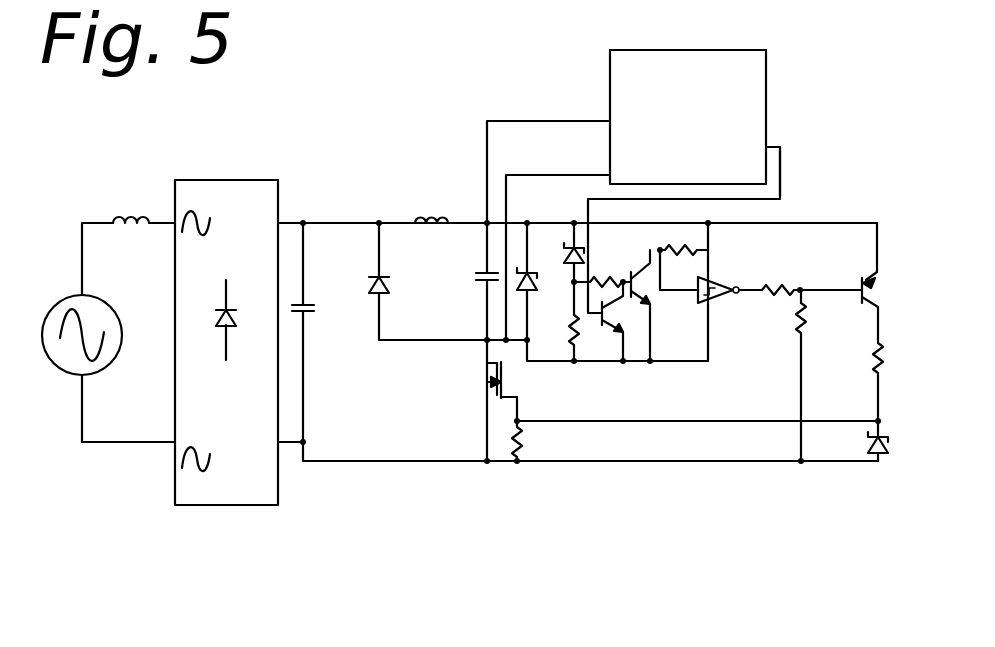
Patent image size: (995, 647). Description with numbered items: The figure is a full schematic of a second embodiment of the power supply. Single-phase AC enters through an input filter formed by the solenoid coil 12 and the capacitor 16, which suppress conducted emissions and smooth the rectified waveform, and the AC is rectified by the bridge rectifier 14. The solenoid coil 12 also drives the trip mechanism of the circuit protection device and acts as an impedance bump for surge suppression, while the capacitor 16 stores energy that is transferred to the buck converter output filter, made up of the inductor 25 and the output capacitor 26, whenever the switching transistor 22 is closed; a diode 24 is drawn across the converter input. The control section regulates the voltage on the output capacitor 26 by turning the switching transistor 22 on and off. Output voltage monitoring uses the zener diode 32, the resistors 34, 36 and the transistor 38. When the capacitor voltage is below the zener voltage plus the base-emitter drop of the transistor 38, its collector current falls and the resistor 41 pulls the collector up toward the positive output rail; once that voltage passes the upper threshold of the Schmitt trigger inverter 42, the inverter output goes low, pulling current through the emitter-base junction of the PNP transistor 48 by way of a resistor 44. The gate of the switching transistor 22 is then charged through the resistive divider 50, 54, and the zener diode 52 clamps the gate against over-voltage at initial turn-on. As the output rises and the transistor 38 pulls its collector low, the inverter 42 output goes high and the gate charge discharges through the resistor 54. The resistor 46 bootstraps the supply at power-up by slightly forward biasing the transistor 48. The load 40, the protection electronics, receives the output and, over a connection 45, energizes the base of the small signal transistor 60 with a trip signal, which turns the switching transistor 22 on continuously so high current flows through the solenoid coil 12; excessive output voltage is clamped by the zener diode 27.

The solenoid coil 12 is at (130, 213).
The bridge rectifier 14 is at (240, 401).
The capacitor 16 is at (304, 313).
The switching transistor 22 is at (487, 380).
The diode 24 is at (376, 268).
The inductor 25 is at (438, 214).
The output capacitor 26 is at (478, 271).
The zener diode 27 is at (531, 292).
The zener diode 32 is at (574, 246).
The resistor 34 is at (572, 346).
The resistor 36 is at (605, 273).
The transistor 38 is at (633, 270).
The load 40 is at (767, 112).
The resistor 41 is at (686, 255).
The Schmitt trigger inverter 42 is at (710, 277).
The resistor 44 is at (767, 286).
The feedback line 45 is at (781, 170).
The resistor 46 is at (793, 328).
The PNP transistor 48 is at (863, 279).
The resistor 50 is at (872, 364).
The zener diode 52 is at (878, 464).
The resistor 54 is at (522, 442).
The small signal transistor 60 is at (603, 330).